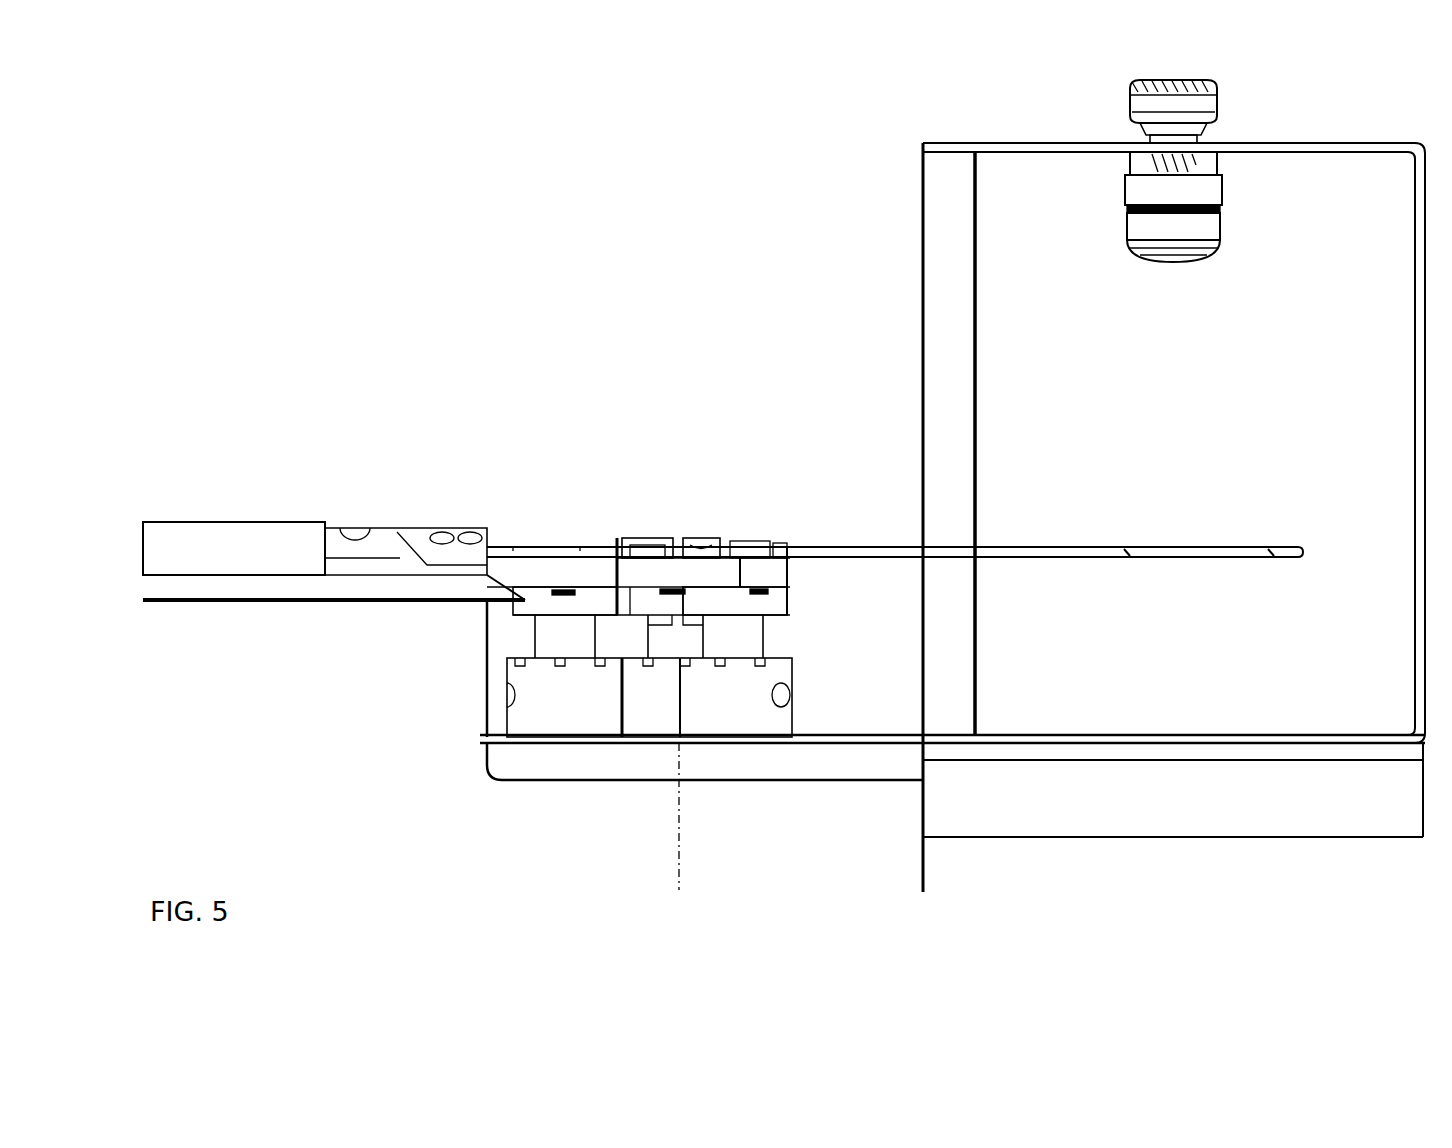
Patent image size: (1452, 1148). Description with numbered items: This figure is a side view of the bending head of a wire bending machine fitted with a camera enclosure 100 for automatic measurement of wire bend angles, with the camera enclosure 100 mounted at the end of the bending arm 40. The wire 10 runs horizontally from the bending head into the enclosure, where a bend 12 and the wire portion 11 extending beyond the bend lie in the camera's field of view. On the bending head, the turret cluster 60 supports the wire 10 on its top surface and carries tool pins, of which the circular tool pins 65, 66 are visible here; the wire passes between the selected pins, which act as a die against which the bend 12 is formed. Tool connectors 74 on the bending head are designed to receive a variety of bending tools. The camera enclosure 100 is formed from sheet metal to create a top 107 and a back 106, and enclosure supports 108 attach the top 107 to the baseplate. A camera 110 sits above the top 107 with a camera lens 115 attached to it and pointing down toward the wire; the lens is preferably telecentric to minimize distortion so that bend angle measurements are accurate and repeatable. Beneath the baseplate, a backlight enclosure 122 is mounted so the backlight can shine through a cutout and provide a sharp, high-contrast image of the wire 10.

The wire 10 is at (551, 547).
The wire portion 11 is at (1264, 547).
The bend 12 is at (1130, 547).
The bending arm 40 is at (356, 800).
The turret cluster 60 is at (620, 542).
The tool pin 65 is at (700, 548).
The tool pin 66 is at (648, 548).
The tool connectors 74 is at (545, 608).
The camera enclosure 100 is at (1428, 878).
The back 106 is at (1405, 345).
The top 107 is at (1345, 153).
The enclosure supports 108 is at (925, 330).
The camera 110 is at (1138, 100).
The camera lens 115 is at (1134, 225).
The backlight enclosure 122 is at (1113, 826).